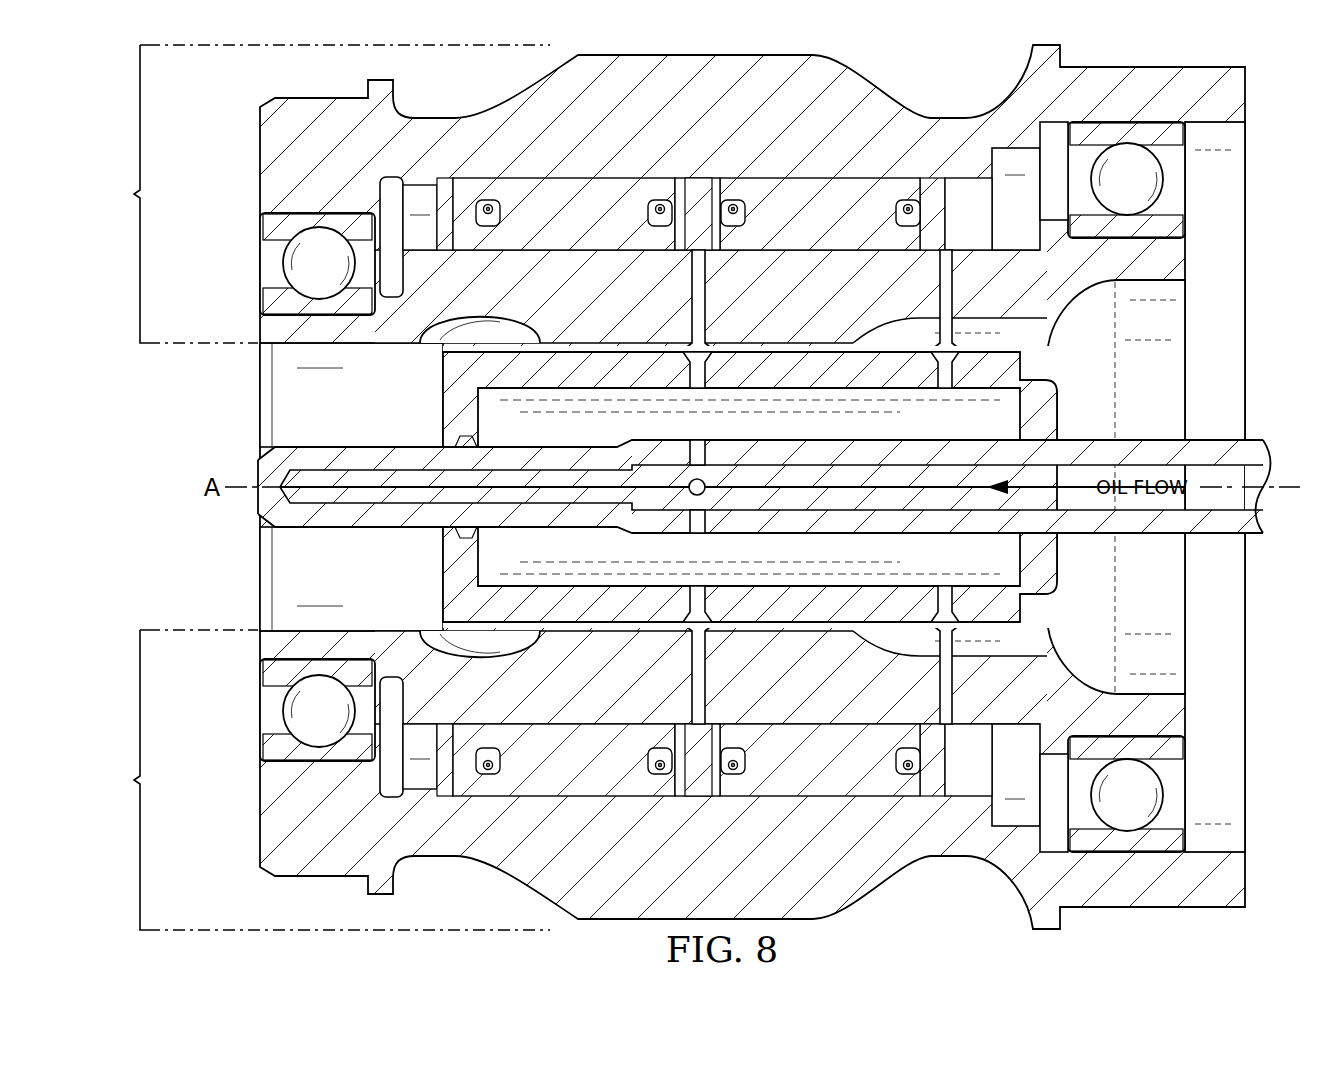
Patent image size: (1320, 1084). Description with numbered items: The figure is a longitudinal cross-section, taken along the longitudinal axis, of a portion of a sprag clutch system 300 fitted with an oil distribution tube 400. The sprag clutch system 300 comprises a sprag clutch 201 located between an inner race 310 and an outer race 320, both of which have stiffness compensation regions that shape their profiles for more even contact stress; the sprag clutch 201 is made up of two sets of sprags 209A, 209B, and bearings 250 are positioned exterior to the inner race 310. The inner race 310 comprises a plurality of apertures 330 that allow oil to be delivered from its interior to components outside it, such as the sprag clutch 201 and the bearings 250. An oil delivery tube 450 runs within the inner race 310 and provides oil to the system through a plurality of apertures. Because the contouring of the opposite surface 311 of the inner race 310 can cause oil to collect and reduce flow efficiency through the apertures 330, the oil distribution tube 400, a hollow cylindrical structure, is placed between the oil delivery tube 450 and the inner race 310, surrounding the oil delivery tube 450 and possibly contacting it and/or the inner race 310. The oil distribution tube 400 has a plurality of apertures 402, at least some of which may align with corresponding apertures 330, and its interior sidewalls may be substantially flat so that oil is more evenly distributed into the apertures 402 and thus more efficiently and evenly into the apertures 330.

The sprag clutch 201 is at (957, 186).
The first set of sprags 209A is at (545, 227).
The second set of sprags 209B is at (788, 229).
The bearings 250 is at (252, 262).
The sprag clutch system 300 is at (315, 487).
The inner race 310 is at (547, 311).
The opposite surface 311 is at (480, 657).
The outer race 320 is at (674, 124).
The apertures 330 is at (702, 330).
The oil distribution tube 400 is at (450, 400).
The apertures 402 is at (700, 385).
The oil delivery tube 450 is at (340, 455).